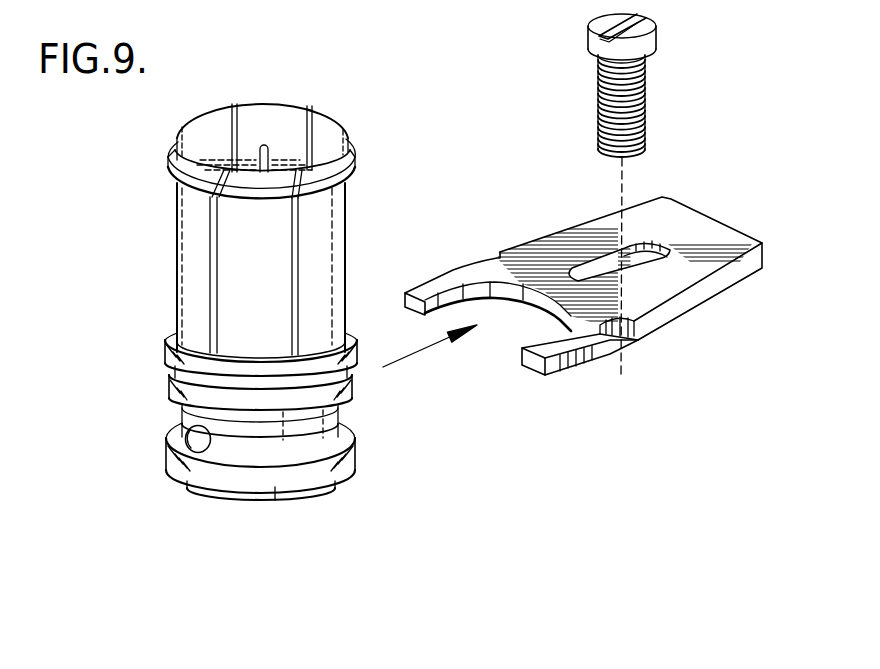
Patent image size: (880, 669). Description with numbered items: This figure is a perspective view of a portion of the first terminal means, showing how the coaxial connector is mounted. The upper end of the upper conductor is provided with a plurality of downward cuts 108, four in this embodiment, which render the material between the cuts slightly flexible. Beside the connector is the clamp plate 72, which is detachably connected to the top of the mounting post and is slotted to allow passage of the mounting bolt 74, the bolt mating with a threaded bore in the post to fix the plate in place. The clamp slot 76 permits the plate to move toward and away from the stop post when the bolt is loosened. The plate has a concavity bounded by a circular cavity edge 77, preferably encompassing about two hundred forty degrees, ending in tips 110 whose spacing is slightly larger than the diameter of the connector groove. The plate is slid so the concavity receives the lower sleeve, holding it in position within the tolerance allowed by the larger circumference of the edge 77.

The downward cuts 108 is at (212, 255).
The clamp plate 72 is at (717, 268).
The mounting bolt 74 is at (646, 93).
The clamp slot 76 is at (657, 243).
The circular cavity edge 77 is at (470, 281).
The tips 110 is at (432, 314).